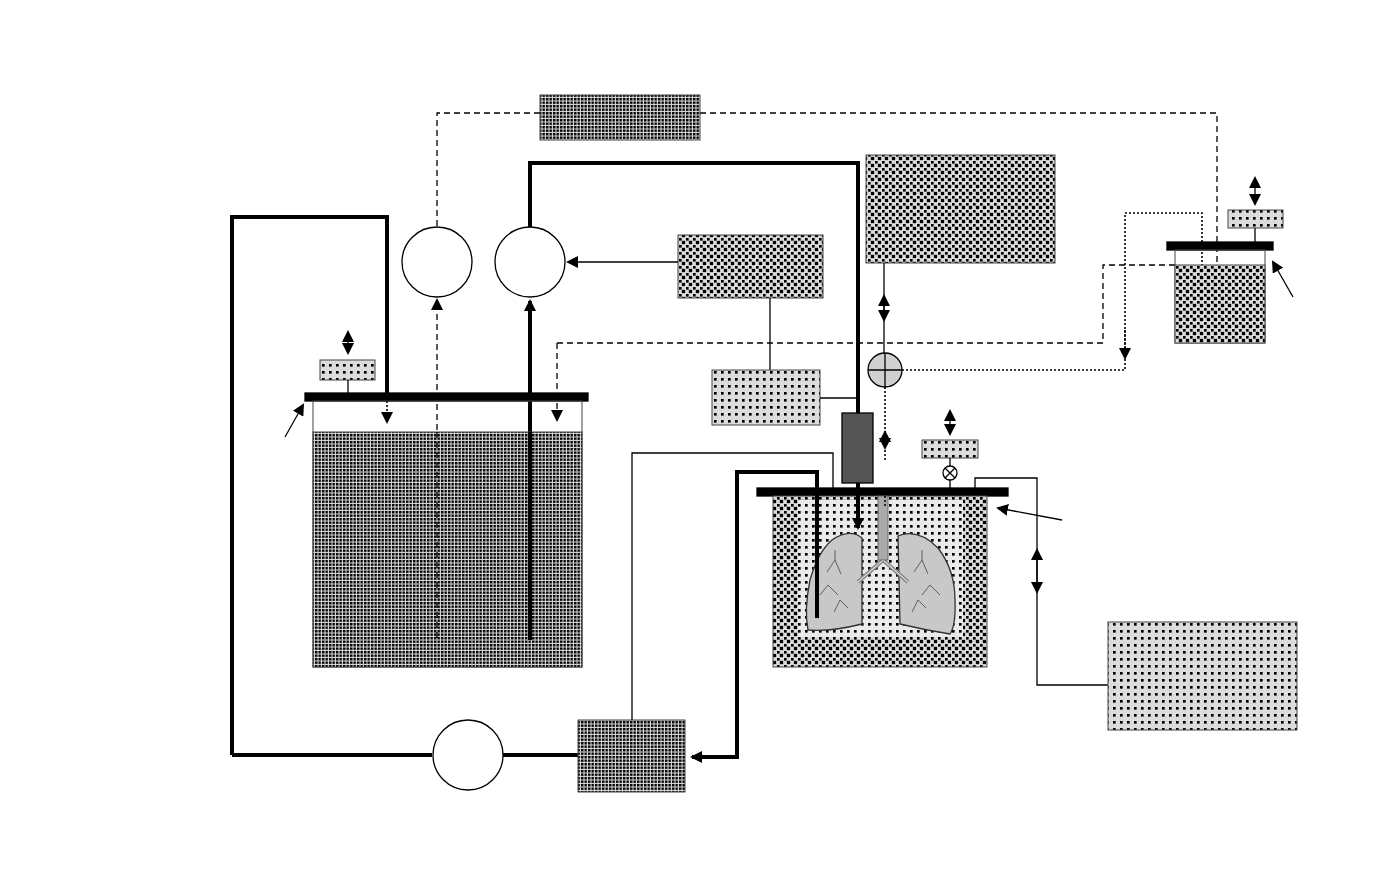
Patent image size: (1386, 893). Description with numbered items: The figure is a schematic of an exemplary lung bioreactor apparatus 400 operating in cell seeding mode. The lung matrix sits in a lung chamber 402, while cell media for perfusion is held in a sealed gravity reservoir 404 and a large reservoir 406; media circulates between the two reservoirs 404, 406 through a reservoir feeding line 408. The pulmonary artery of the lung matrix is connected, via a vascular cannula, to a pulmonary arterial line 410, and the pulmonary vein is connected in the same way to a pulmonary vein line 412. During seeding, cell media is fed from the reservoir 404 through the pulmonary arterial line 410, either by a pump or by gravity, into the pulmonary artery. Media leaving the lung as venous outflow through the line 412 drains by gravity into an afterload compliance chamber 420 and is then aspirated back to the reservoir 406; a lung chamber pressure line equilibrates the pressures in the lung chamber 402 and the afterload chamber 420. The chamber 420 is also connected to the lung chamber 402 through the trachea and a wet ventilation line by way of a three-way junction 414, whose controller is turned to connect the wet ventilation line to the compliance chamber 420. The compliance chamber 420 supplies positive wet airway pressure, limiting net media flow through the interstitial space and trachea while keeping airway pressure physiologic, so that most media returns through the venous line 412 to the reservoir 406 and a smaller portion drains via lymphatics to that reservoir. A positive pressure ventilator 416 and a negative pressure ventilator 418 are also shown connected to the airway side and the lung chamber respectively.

The perfusion / ventilation unit (seeding mode) 400 is at (1295, 78).
The lung chamber 402 is at (887, 668).
The sealed gravity reservoir 404 is at (1268, 322).
The large reservoir 406 is at (313, 516).
The reservoir feeding line 408 is at (528, 183).
The pulmonary arterial line 410 is at (857, 513).
The pulmonary vein line 412 is at (815, 557).
The three-way junction 414 is at (892, 355).
The positive pressure ventilator 416 is at (960, 263).
The negative pressure ventilator 418 is at (1185, 622).
The afterload compliance chamber 420 is at (588, 792).